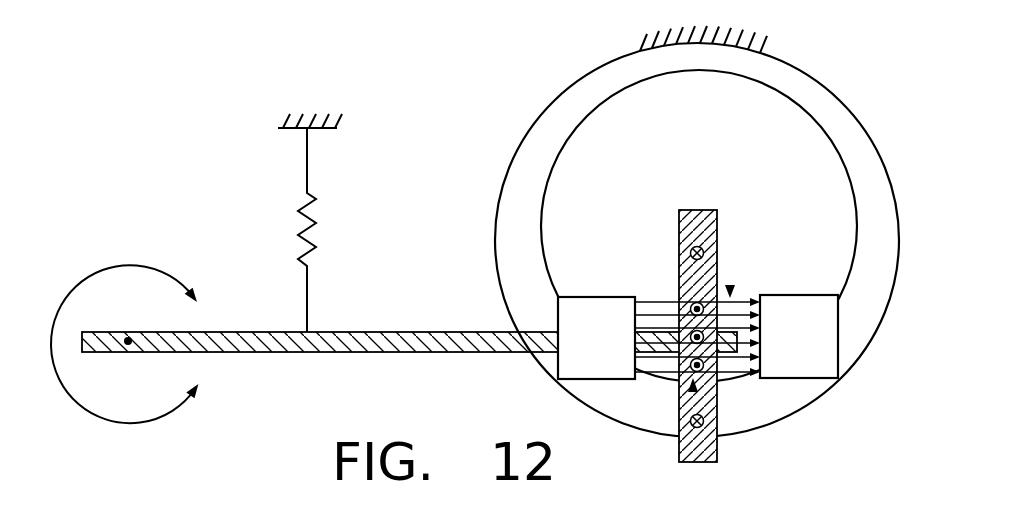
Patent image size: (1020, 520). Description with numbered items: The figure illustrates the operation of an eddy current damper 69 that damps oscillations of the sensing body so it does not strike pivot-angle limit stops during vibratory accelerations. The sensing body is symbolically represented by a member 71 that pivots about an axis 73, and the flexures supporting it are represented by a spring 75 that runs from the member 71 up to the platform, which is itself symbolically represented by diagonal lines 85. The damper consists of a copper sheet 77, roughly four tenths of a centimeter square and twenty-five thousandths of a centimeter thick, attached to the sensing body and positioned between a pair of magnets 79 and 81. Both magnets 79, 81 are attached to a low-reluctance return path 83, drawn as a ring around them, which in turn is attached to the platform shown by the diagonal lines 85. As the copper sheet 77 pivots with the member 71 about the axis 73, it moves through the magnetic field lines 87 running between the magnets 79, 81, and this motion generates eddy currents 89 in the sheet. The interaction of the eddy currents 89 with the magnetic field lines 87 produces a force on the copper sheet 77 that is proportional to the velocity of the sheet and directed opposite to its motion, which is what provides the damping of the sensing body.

The eddy current damper 69 is at (464, 213).
The member 71 is at (310, 354).
The axis 73 is at (128, 337).
The spring 75 is at (300, 224).
The copper sheet 77 is at (718, 428).
The magnet 79 is at (588, 297).
The magnet 81 is at (795, 295).
The low-reluctance return path 83 is at (698, 72).
The diagonal lines 85 is at (340, 119).
The magnetic field lines 87 is at (730, 286).
The eddy currents 89 is at (678, 400).